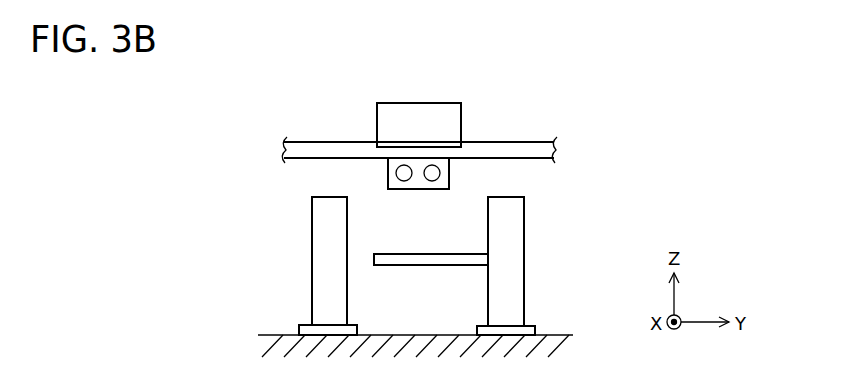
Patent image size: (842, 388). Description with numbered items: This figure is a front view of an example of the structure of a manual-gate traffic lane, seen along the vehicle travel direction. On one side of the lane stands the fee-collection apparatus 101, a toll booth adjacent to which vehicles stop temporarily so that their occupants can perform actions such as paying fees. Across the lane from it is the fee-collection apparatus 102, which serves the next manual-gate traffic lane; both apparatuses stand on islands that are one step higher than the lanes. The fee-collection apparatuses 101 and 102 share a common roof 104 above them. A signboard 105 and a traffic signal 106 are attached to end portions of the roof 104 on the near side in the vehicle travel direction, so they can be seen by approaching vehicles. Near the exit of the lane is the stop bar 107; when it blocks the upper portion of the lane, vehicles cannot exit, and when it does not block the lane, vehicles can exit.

The fee-collection apparatus 101 is at (519, 242).
The fee-collection apparatus 102 is at (318, 242).
The roof 104 is at (518, 148).
The signboard 105 is at (461, 122).
The traffic signal 106 is at (449, 172).
The stop bar 107 is at (435, 261).